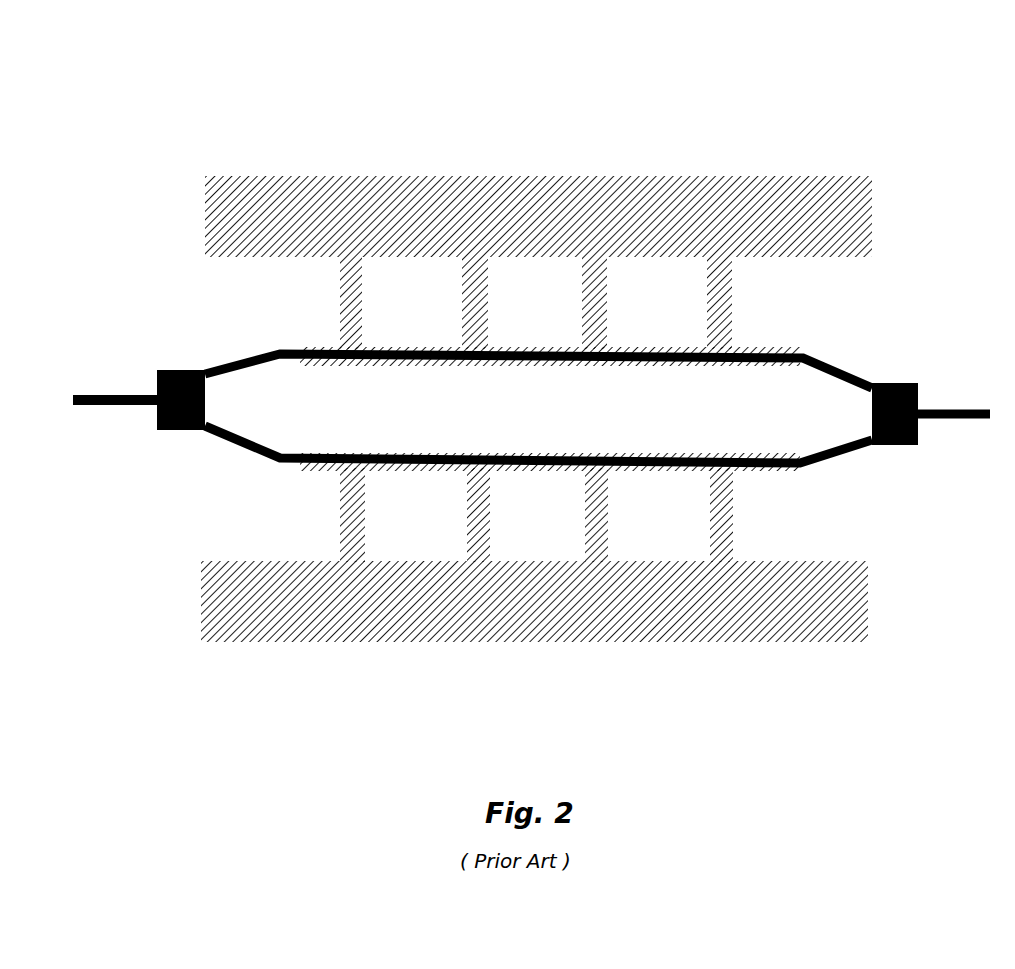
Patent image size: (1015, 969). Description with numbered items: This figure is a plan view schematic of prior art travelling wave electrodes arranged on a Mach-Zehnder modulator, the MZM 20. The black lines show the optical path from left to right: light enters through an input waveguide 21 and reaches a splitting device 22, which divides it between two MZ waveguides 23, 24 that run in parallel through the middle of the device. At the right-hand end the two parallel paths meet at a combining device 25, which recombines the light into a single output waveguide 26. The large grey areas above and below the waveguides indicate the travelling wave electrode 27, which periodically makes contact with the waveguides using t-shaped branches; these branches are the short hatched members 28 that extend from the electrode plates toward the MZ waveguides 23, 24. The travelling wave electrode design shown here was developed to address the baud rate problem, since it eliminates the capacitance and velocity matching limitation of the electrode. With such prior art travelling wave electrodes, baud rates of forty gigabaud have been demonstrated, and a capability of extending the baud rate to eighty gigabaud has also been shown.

The MZM 20 is at (280, 150).
The input waveguide 21 is at (93, 392).
The splitting device 22 is at (167, 368).
The MZ waveguide 23 is at (245, 355).
The MZ waveguide 24 is at (240, 440).
The combining device 25 is at (890, 383).
The output waveguide 26 is at (975, 422).
The travelling wave electrode 27 is at (490, 176).
The support posts / pillars 28 is at (440, 348).